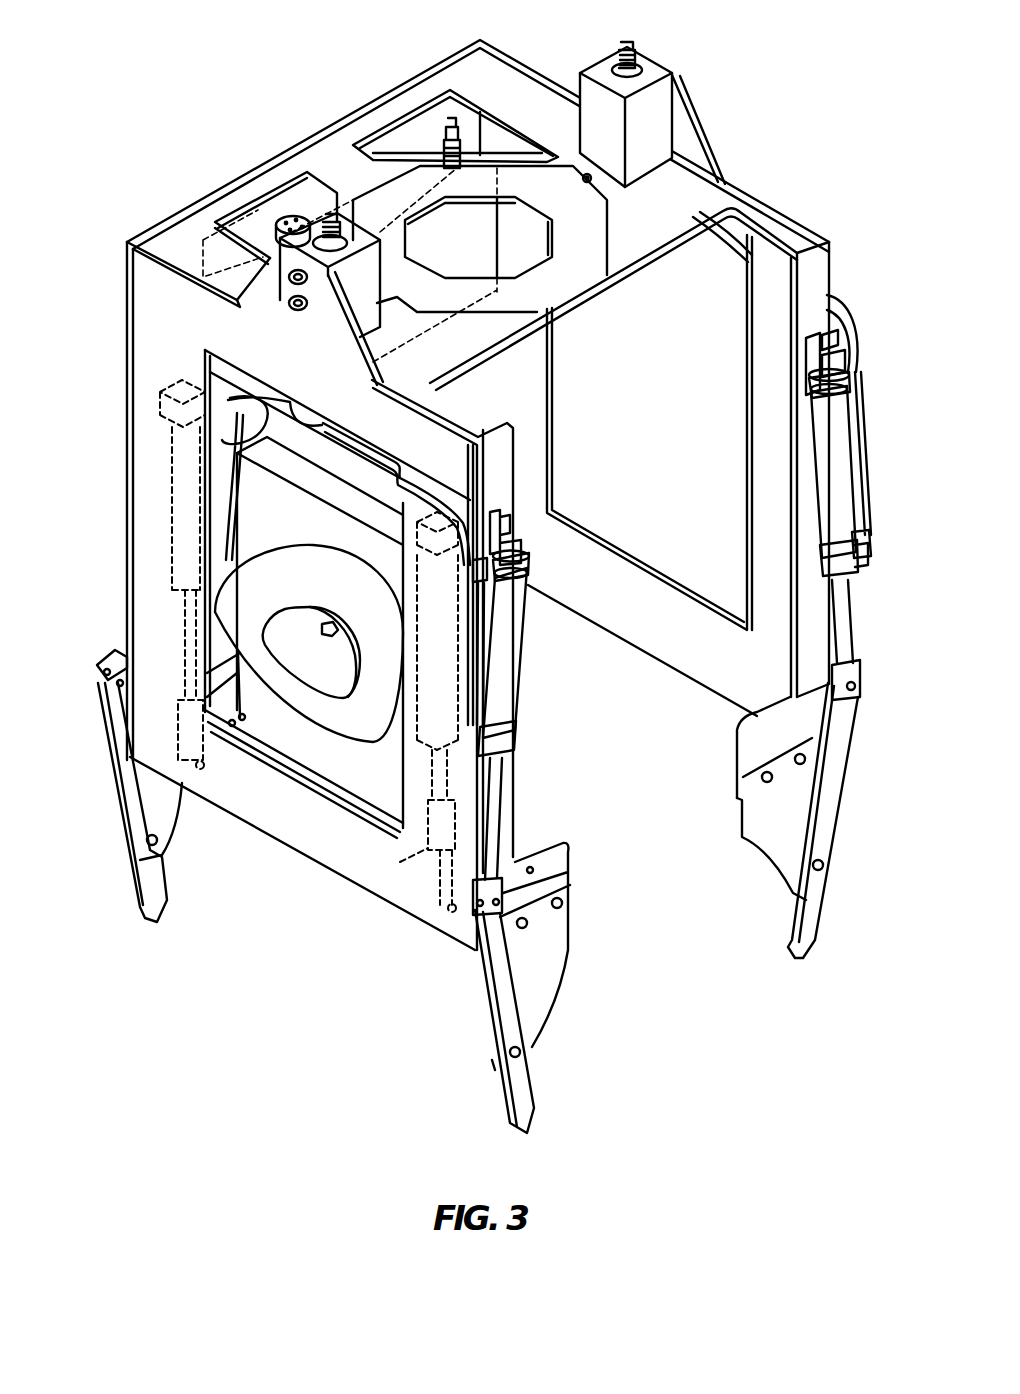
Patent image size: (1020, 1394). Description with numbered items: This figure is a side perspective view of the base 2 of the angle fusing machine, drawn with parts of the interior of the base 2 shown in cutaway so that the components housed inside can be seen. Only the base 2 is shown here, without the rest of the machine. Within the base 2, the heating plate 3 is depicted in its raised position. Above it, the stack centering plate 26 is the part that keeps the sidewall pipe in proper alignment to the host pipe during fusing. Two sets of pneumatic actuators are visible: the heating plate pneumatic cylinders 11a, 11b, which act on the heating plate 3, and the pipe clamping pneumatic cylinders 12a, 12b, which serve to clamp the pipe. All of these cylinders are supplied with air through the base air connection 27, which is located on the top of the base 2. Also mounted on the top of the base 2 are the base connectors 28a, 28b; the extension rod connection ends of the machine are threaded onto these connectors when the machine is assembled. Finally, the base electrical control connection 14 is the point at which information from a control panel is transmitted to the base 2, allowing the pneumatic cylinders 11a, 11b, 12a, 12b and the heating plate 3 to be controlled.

The base 2 is at (168, 320).
The heating plate 3 is at (345, 735).
The heating plate pneumatic cylinder 11a is at (176, 490).
The heating plate pneumatic cylinder 11b is at (452, 660).
The pipe clamping pneumatic cylinder 12a is at (523, 640).
The pipe clamping pneumatic cylinder 12b is at (840, 492).
The base electrical control connection 14 is at (276, 214).
The stack centering plate 26 is at (608, 230).
The base air connection 27 is at (452, 118).
The base connector 28a is at (337, 220).
The base connector 28b is at (632, 56).